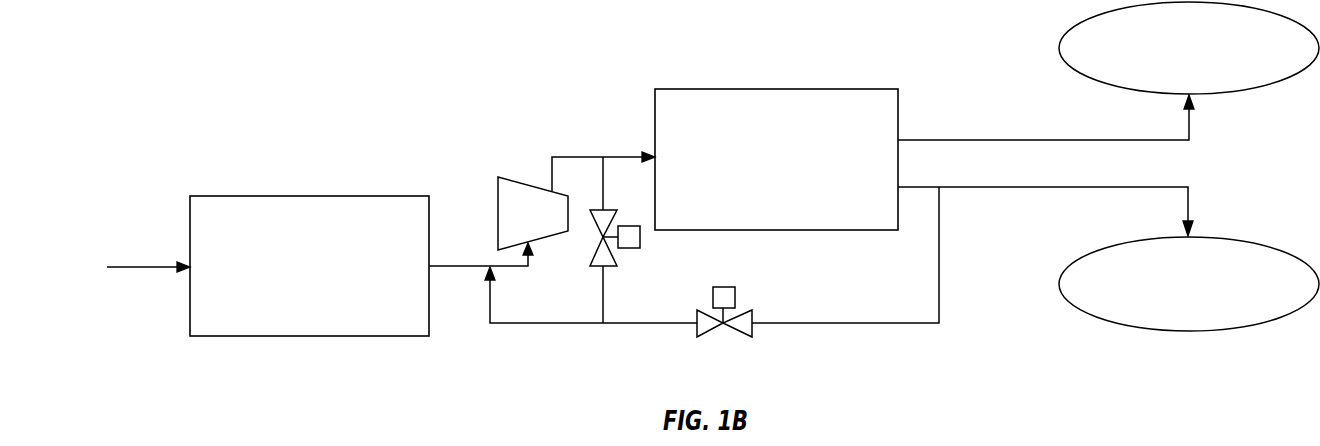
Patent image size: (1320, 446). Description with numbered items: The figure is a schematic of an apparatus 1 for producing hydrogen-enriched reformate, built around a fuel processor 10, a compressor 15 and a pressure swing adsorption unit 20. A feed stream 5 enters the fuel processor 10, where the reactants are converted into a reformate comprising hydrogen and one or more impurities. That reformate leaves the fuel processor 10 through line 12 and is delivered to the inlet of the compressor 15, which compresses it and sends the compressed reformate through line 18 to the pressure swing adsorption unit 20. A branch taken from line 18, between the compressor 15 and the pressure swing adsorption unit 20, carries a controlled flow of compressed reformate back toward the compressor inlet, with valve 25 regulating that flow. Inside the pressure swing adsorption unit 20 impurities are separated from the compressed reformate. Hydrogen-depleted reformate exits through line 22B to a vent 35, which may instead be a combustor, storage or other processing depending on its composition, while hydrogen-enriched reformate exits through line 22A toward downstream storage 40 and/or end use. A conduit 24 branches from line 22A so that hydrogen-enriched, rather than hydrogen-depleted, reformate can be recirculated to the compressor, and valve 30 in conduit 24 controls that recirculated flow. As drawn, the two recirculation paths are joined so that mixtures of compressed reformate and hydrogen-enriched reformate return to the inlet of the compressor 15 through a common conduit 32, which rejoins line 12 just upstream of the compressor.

The apparatus 1 is at (193, 56).
The feed stream 5 is at (93, 279).
The fuel processor 10 is at (324, 281).
The line 12 is at (448, 266).
The compressor 15 is at (546, 226).
The line 18 is at (625, 157).
The pressure swing adsorption unit 20 is at (791, 174).
The line 22A is at (1005, 187).
The line 22B is at (990, 140).
The conduit 24 is at (873, 323).
The valve 25 is at (640, 238).
The valve 30 is at (742, 327).
The common conduit 32 is at (538, 323).
The vent 35 is at (1202, 61).
The storage 40 is at (1202, 297).